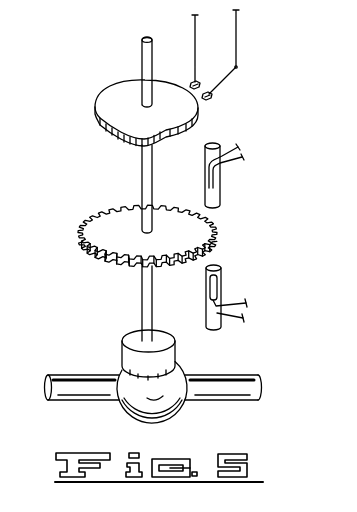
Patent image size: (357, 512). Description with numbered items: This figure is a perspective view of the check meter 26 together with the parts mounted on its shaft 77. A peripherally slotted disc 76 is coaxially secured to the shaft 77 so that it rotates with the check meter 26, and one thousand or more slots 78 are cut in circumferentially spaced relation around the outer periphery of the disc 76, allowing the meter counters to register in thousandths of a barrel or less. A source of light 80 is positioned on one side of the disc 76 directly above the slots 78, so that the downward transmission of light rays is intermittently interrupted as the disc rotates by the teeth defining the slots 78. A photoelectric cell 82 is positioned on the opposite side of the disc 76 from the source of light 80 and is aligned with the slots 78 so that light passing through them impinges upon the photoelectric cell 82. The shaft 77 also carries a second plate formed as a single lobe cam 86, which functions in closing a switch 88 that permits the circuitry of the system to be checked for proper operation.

The check meter 26 is at (127, 412).
The peripherally slotted disc 76 is at (128, 220).
The shaft 77 is at (147, 304).
The slots 78 is at (117, 264).
The source of light 80 is at (218, 201).
The photoelectric cell 82 is at (222, 286).
The single lobe cam 86 is at (137, 134).
The switch 88 is at (221, 92).